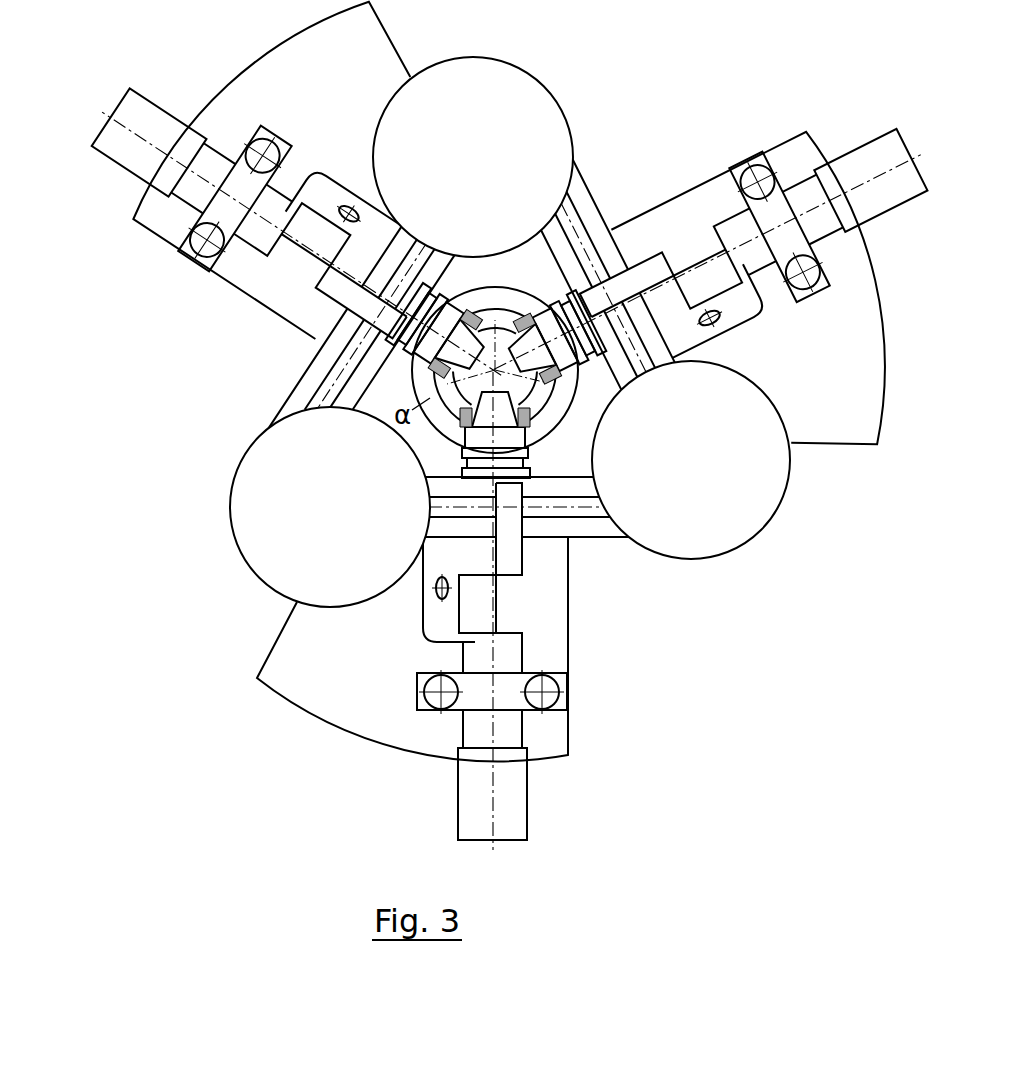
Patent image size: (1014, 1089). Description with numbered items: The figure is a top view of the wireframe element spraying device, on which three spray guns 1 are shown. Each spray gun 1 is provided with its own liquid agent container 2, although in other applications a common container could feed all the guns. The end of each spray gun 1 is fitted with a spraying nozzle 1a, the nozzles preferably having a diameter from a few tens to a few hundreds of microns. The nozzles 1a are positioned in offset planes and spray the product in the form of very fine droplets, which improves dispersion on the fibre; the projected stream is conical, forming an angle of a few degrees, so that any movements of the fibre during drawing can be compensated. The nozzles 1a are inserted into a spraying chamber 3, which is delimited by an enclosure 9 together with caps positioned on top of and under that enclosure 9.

The spray gun 1 is at (292, 266).
The spraying nozzle 1a is at (543, 335).
The liquid agent container 2 is at (486, 171).
The spraying chamber 3 is at (450, 412).
The enclosure 9 is at (558, 410).